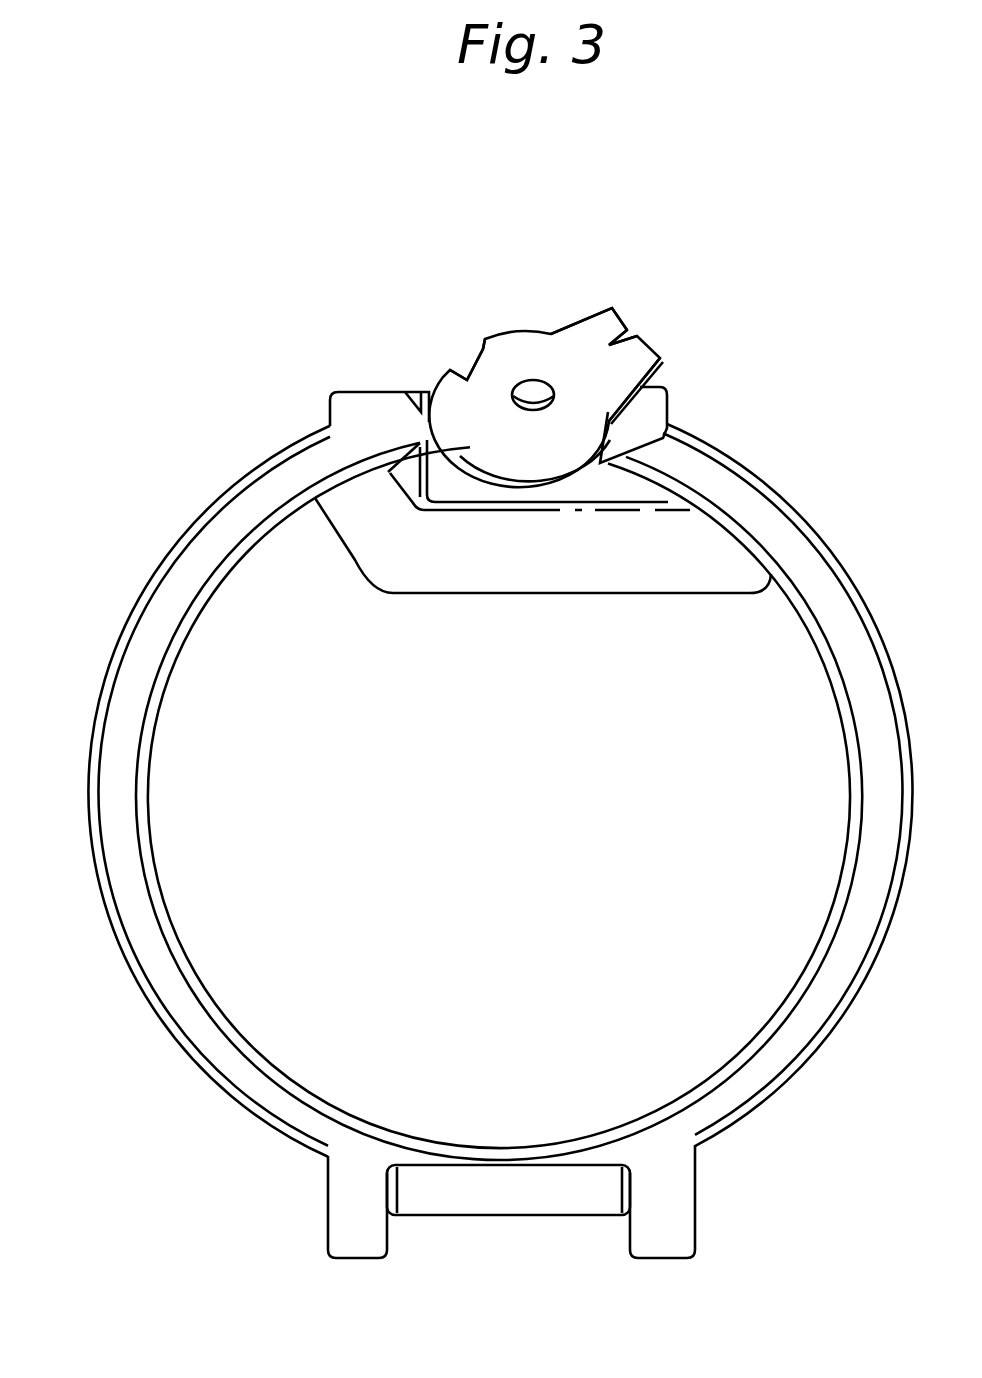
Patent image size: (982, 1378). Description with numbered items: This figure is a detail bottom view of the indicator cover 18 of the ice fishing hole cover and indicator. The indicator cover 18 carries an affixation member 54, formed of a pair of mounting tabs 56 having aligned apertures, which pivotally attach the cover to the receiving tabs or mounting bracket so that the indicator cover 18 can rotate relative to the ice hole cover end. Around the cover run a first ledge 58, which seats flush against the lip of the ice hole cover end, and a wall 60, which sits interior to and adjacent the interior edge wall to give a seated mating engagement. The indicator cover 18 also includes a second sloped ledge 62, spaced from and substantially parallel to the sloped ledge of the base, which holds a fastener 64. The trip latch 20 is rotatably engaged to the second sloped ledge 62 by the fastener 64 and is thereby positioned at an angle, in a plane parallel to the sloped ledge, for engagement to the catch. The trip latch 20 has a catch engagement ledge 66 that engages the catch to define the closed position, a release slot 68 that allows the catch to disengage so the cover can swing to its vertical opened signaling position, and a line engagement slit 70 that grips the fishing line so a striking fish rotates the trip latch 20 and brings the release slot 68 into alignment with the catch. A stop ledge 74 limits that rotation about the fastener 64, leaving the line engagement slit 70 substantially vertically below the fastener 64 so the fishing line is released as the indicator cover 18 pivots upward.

The indicator cover 18 is at (482, 741).
The trip latch 20 is at (518, 233).
The affixation member 54 is at (617, 1240).
The mounting tabs 56 is at (328, 1205).
The first ledge 58 is at (203, 530).
The wall 60 is at (150, 843).
The second sloped ledge 62 is at (575, 482).
The fastener 64 is at (557, 397).
The catch engagement ledge 66 is at (538, 330).
The release slot 68 is at (473, 357).
The line engagement slit 70 is at (622, 337).
The stop ledge 74 is at (413, 457).